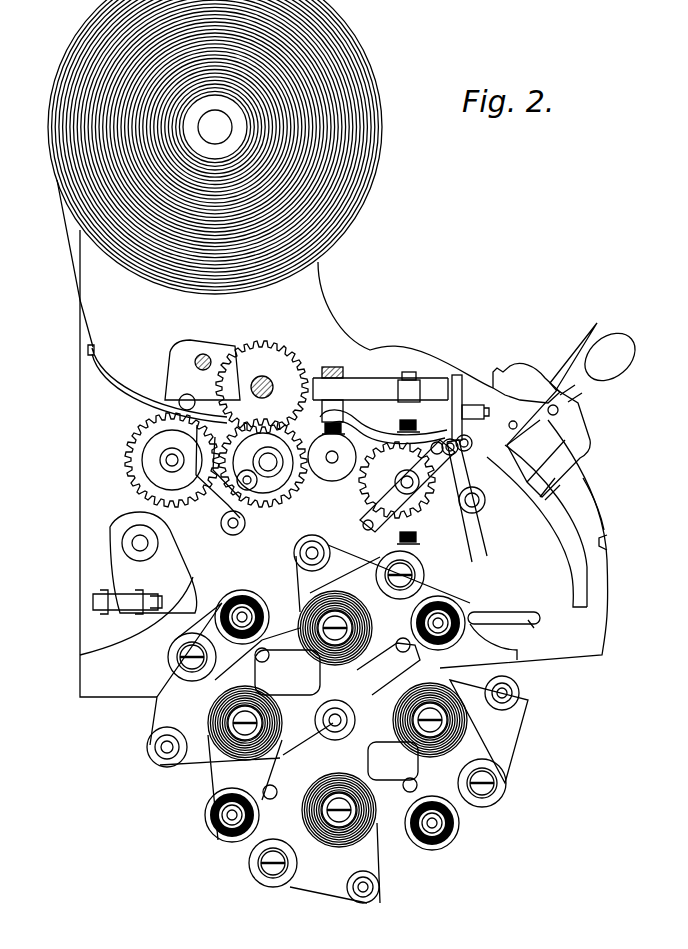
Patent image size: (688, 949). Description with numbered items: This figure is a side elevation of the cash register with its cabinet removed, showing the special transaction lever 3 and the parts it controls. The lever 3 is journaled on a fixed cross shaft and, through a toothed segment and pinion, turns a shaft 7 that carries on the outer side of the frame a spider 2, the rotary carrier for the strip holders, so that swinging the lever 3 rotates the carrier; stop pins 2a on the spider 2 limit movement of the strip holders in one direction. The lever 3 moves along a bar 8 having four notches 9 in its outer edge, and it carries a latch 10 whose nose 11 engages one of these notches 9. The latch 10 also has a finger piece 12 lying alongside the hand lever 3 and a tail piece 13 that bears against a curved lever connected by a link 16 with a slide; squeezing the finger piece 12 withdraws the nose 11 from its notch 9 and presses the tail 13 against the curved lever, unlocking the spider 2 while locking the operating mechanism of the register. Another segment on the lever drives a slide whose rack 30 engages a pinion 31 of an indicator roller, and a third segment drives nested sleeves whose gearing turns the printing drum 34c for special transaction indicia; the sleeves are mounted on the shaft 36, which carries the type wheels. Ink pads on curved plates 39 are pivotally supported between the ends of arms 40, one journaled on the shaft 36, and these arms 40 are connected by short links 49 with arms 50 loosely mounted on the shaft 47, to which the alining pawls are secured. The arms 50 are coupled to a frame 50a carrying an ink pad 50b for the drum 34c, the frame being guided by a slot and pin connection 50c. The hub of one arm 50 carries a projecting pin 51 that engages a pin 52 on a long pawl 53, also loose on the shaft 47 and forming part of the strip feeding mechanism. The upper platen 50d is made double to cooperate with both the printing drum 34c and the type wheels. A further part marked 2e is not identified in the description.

The spider 2 is at (470, 758).
The stop pins 2a is at (316, 565).
The end pulley 2e is at (355, 876).
The special transaction lever 3 is at (624, 355).
The shaft 7 is at (216, 768).
The bar 8 is at (582, 521).
The notches 9 is at (581, 483).
The latch 10 is at (573, 427).
The nose 11 is at (496, 380).
The finger piece 12 is at (573, 350).
The tail piece 13 is at (565, 487).
The link 16 is at (505, 640).
The rack 30 is at (408, 420).
The pinion 31 is at (330, 500).
The printing drum 34c is at (296, 485).
The shaft 36 is at (365, 498).
The curved plates 39 is at (458, 378).
The arms 40 is at (407, 486).
The shaft 47 is at (486, 500).
The short links 49 is at (470, 446).
The arms 50 is at (476, 478).
The frame 50a is at (374, 418).
The ink pad 50b is at (340, 392).
The slot and pin connection 50c is at (358, 398).
The upper platen 50d is at (400, 380).
The projecting pin 51 is at (445, 492).
The pin 52 is at (600, 540).
The long pawl 53 is at (525, 575).